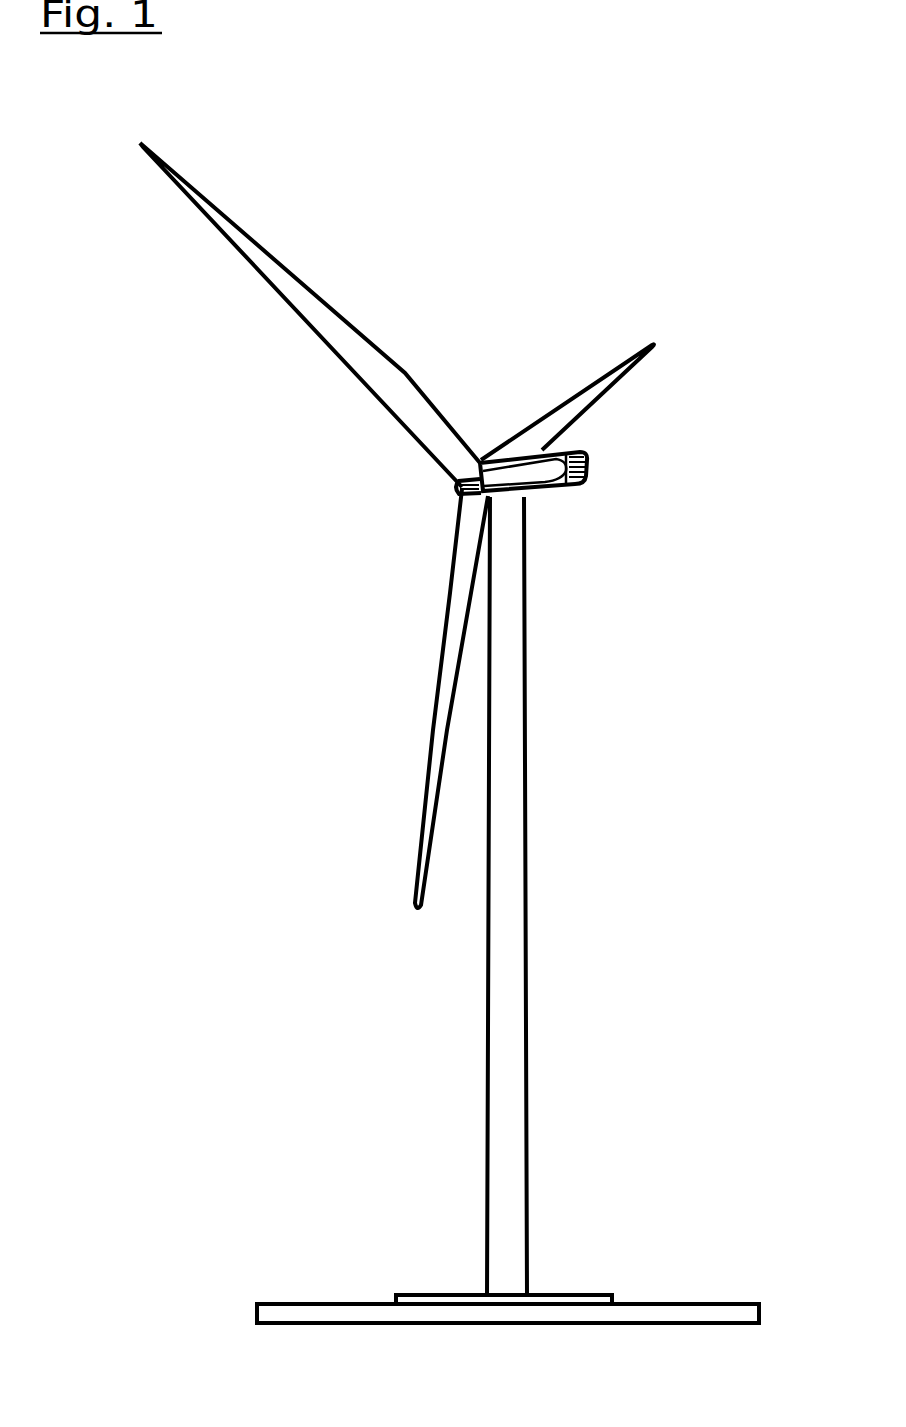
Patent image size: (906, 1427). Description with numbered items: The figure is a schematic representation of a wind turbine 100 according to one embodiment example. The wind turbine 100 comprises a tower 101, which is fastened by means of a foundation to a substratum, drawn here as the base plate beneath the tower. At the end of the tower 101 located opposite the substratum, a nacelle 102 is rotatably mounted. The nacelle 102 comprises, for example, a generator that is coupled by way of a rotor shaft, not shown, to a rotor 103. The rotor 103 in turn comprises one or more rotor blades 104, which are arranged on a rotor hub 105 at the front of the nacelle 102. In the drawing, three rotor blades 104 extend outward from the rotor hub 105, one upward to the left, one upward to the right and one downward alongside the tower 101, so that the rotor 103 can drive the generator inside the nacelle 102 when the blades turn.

The wind turbine 100 is at (615, 773).
The tower 101 is at (505, 988).
The nacelle 102 is at (545, 494).
The rotor 103 is at (483, 396).
The rotor blade 104 is at (343, 362).
The rotor hub 105 is at (463, 490).